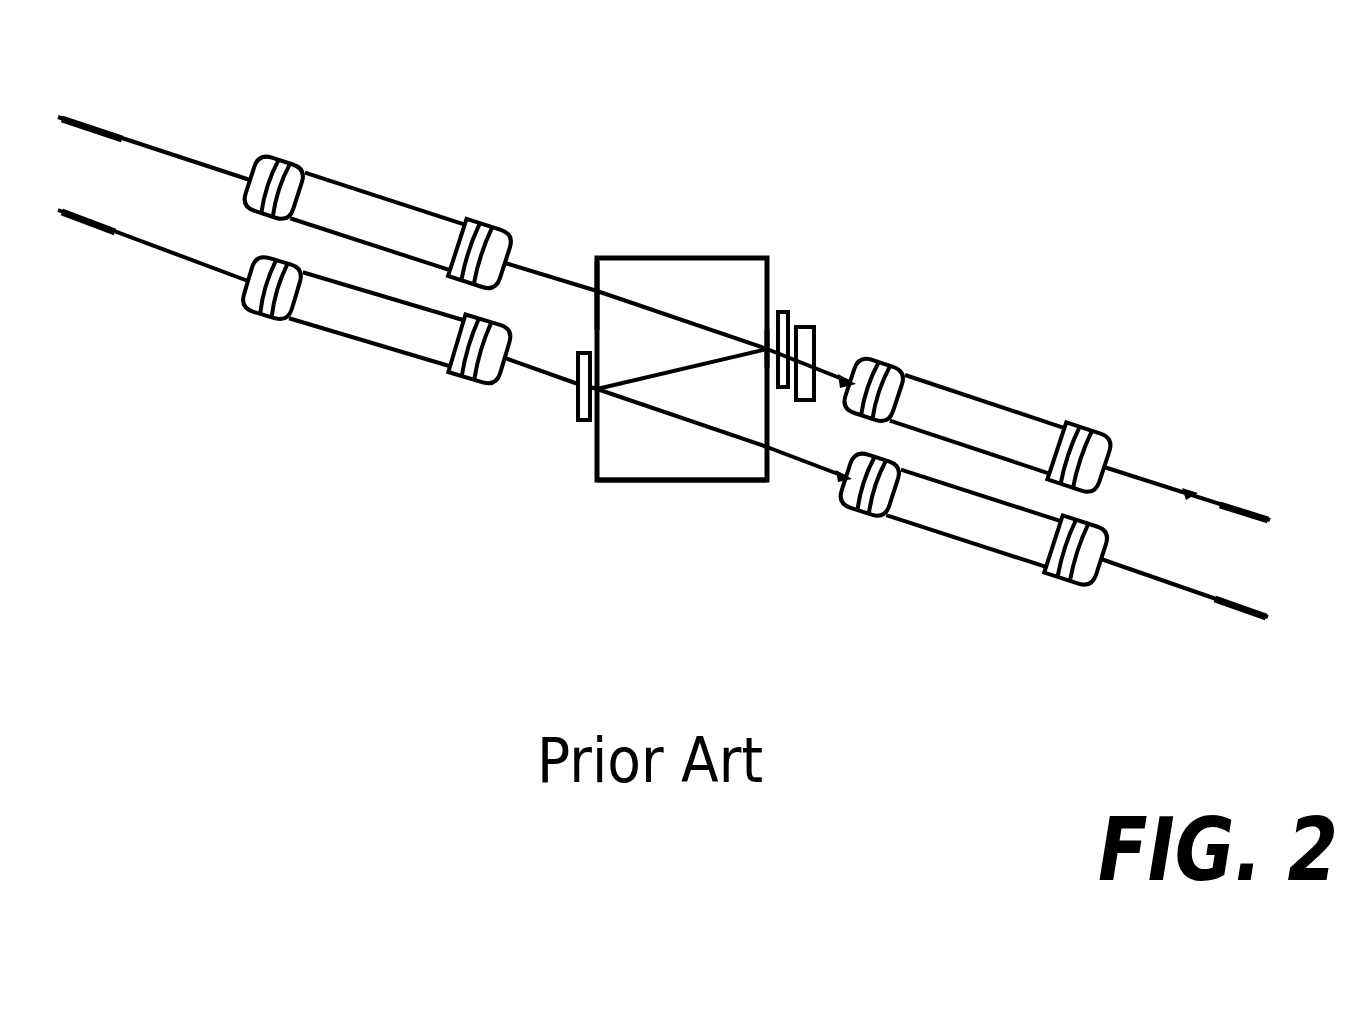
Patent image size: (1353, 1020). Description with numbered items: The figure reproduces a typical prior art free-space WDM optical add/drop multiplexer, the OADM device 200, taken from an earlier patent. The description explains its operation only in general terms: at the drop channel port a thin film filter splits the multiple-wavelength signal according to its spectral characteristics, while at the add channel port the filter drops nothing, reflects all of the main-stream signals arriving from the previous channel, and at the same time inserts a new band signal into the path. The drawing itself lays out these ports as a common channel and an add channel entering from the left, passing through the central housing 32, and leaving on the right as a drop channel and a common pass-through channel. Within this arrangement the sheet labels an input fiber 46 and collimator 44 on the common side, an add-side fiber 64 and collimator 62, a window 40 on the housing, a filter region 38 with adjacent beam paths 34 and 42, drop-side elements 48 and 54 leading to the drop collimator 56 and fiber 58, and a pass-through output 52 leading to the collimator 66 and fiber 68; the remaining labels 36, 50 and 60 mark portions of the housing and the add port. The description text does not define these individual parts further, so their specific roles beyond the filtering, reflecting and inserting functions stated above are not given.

The OADM device 200 is at (664, 367).
The housing 32 is at (652, 253).
The common beam path 34 is at (668, 305).
The housing input wall 36 is at (596, 258).
The thin film filter 38 is at (767, 347).
The add port window 40 is at (592, 380).
The pass-through beam path 42 is at (735, 440).
The common collimator 44 is at (435, 214).
The common input fiber 46 is at (155, 143).
The drop filter element 48 is at (784, 312).
The housing bottom wall 50 is at (596, 468).
The pass-through output beam 52 is at (772, 462).
The drop port window 54 is at (810, 327).
The drop collimator 56 is at (1056, 432).
The drop output fiber 58 is at (1194, 489).
The add port beam 60 is at (578, 408).
The add collimator 62 is at (330, 332).
The add input fiber 64 is at (128, 236).
The pass-through collimator 66 is at (1094, 584).
The pass-through output fiber 68 is at (1160, 590).